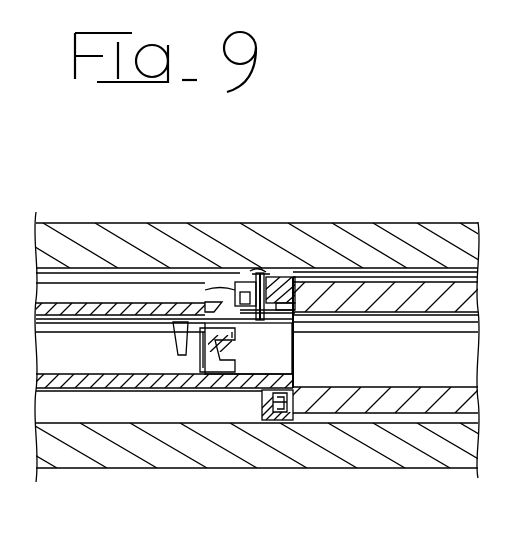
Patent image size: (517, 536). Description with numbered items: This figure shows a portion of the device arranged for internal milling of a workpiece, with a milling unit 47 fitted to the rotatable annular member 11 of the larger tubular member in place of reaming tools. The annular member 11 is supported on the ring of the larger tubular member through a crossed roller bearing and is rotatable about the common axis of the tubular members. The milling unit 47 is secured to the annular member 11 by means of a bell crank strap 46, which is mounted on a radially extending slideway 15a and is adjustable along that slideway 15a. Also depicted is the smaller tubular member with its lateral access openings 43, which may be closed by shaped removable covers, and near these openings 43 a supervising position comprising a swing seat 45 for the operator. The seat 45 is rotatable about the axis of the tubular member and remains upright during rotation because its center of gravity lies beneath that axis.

The rotatable annular member 11 is at (269, 273).
The radially extending slideway 15a is at (253, 273).
The lateral access openings 43 is at (235, 316).
The swing seat 45 is at (197, 365).
The bell crank strap 46 is at (233, 288).
The milling unit 47 is at (225, 267).